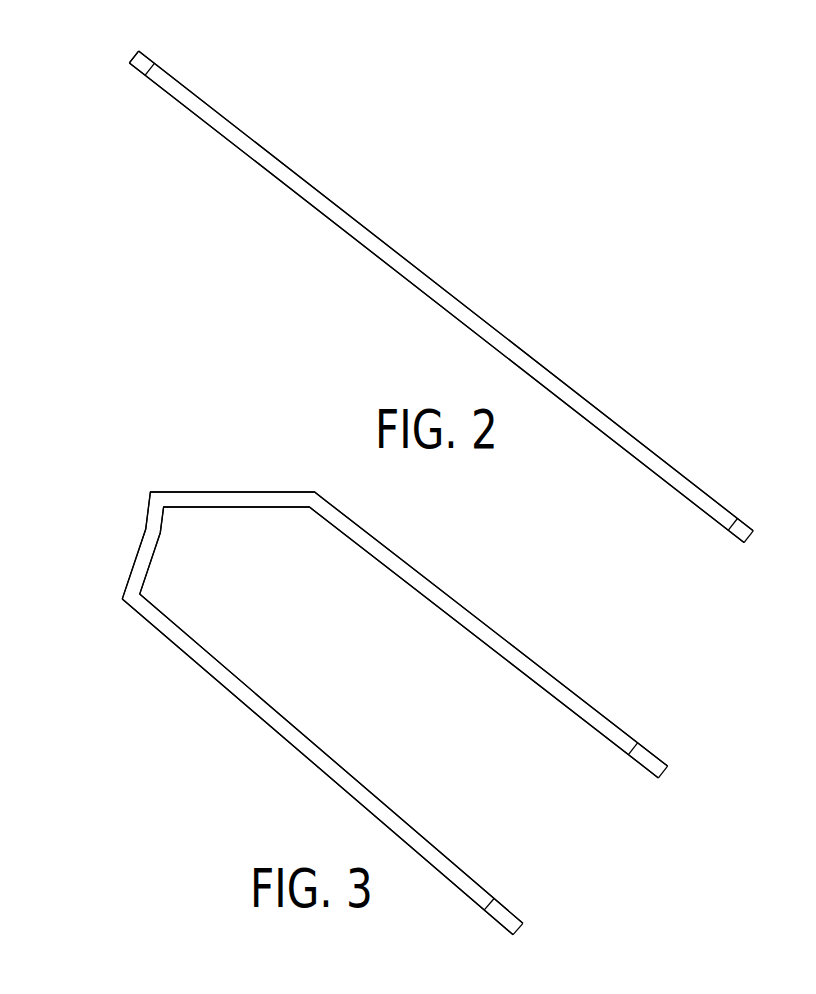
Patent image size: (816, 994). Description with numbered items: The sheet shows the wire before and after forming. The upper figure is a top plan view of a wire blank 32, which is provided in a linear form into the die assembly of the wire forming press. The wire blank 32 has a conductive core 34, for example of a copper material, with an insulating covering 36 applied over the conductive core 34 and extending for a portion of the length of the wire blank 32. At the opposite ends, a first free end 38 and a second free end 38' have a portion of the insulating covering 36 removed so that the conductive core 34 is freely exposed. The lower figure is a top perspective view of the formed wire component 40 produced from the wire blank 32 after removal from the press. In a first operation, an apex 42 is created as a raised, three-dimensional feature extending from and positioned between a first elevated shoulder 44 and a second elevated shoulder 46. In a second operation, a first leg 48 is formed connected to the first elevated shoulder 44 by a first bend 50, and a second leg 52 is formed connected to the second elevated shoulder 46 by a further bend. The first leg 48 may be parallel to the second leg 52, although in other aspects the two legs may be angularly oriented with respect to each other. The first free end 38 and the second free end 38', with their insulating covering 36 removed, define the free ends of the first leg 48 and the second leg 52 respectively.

In FIG. 2, the wire blank 32 is at (490, 265).
In FIG. 2, the conductive core 34 is at (143, 70).
In FIG. 2, the insulating covering 36 is at (588, 398).
In FIG. 2, the first free end 38 is at (760, 550).
In FIG. 3, the first free end 38 is at (669, 781).
In FIG. 2, the second free end 38' is at (104, 47).
In FIG. 3, the second free end 38' is at (527, 924).
In FIG. 3, the formed wire component 40 is at (532, 623).
In FIG. 3, the apex 42 is at (152, 492).
In FIG. 3, the first elevated shoulder 44 is at (236, 498).
In FIG. 3, the second elevated shoulder 46 is at (140, 556).
In FIG. 3, the first leg 48 is at (446, 603).
In FIG. 3, the first bend 50 is at (312, 495).
In FIG. 3, the second leg 52 is at (127, 598).